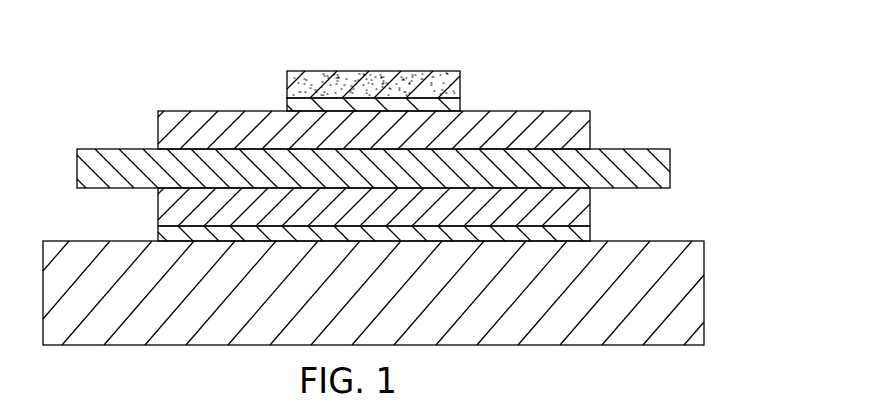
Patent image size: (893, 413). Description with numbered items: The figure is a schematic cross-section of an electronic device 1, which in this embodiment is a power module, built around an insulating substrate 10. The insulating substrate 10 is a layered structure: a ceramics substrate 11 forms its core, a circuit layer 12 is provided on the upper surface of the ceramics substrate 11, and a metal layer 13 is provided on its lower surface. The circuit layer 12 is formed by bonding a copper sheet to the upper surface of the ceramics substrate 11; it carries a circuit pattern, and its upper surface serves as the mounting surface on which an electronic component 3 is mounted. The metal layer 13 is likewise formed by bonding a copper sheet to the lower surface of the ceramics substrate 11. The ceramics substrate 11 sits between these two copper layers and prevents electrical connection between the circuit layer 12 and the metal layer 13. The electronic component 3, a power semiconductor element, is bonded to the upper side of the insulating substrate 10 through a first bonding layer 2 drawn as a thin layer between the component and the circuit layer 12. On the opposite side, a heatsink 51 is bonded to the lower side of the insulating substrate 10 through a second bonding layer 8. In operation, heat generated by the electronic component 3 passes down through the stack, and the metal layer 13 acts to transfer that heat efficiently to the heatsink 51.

The electronic device 1 is at (638, 70).
The insulating substrate 10 is at (108, 126).
The ceramics substrate 11 is at (653, 168).
The circuit layer 12 is at (578, 133).
The metal layer 13 is at (581, 208).
The first bonding layer 2 is at (446, 107).
The electronic component 3 is at (371, 76).
The second bonding layer 8 is at (586, 231).
The heatsink 51 is at (675, 291).